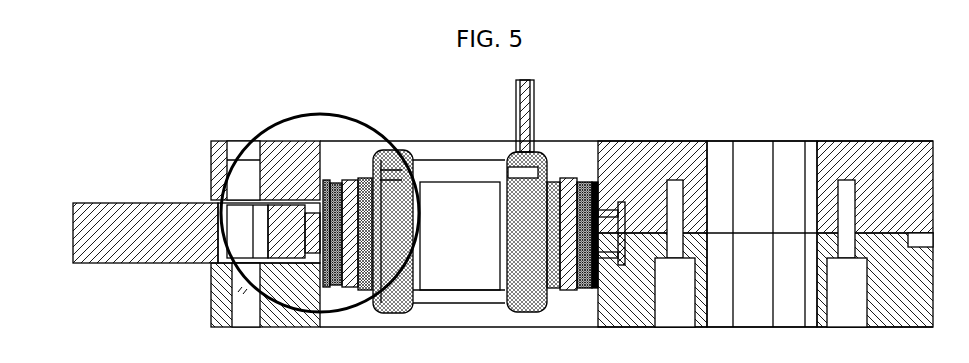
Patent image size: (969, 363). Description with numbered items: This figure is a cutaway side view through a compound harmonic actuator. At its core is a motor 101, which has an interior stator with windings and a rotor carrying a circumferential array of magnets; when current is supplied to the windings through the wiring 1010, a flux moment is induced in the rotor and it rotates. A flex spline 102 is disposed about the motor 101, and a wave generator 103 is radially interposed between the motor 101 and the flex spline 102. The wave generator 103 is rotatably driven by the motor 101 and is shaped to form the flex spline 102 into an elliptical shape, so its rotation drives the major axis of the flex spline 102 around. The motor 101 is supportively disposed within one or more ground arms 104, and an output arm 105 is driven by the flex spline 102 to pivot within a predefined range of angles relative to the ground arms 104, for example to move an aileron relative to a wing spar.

The motor 101 is at (393, 205).
The flex spline 102 is at (323, 192).
The wave generator 103 is at (343, 207).
The ground arm 104 is at (855, 142).
The output arm 105 is at (87, 205).
The wiring 1010 is at (528, 107).